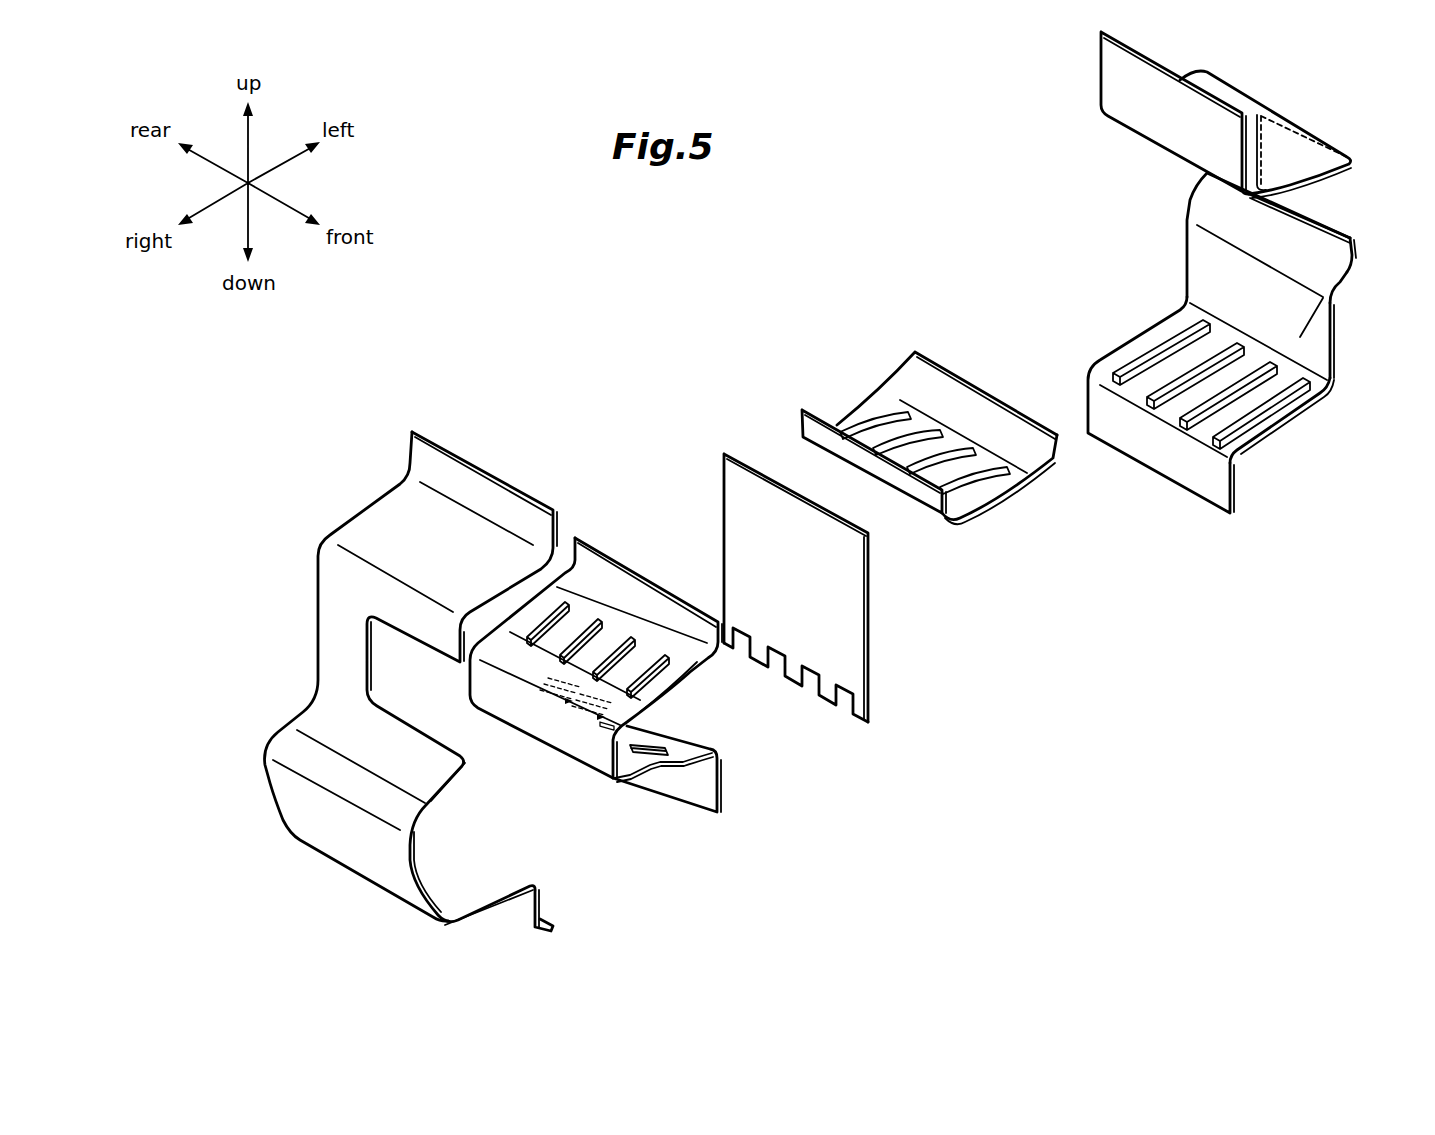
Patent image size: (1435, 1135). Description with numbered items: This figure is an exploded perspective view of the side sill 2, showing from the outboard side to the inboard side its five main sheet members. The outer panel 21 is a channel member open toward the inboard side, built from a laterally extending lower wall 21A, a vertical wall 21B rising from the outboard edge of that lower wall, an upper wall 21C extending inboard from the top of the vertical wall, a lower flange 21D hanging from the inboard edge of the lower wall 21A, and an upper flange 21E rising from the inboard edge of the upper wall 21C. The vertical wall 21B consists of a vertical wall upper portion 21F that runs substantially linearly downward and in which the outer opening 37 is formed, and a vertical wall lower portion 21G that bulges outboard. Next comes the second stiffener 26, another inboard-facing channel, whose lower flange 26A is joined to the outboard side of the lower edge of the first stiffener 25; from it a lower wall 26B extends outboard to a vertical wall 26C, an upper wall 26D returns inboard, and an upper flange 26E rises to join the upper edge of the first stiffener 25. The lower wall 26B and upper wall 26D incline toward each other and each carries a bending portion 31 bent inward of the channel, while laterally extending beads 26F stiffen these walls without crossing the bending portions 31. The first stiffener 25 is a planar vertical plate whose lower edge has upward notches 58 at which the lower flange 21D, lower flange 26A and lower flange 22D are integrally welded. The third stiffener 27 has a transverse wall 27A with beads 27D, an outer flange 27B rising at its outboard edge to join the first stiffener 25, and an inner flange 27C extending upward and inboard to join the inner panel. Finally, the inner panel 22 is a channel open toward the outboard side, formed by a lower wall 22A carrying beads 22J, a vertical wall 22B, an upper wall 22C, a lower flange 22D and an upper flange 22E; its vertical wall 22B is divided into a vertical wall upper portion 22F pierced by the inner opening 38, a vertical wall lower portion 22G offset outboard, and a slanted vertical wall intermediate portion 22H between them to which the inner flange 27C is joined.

The side sill 2 is at (221, 404).
The outer panel 21 is at (307, 521).
The lower wall 21A is at (485, 862).
The vertical wall 21B is at (320, 588).
The upper wall 21C is at (384, 509).
The lower flange 21D is at (506, 905).
The upper flange 21E is at (485, 491).
The vertical wall upper portion 21F is at (322, 637).
The vertical wall lower portion 21G is at (283, 810).
The outer opening 37 is at (370, 681).
The second stiffener 26 is at (586, 542).
The lower flange 26A is at (698, 790).
The lower wall 26B is at (680, 740).
The vertical wall 26C is at (592, 750).
The upper wall 26D is at (612, 624).
The upper flange 26E is at (683, 606).
The beads 26F is at (645, 658).
The bending portion 31 is at (570, 655).
The first stiffener 25 is at (850, 598).
The notches 58 is at (825, 700).
The third stiffener 27 is at (975, 512).
The transverse wall 27A is at (1020, 482).
The outer flange 27B is at (803, 426).
The inner flange 27C is at (952, 390).
The beads 27D is at (905, 436).
The inner panel 22 is at (1316, 408).
The lower wall 22A is at (1256, 432).
The vertical wall 22B is at (1302, 338).
The upper wall 22C is at (1243, 100).
The lower flange 22D is at (1200, 488).
The upper flange 22E is at (1100, 79).
The vertical wall upper portion 22F is at (1348, 249).
The vertical wall lower portion 22G is at (1197, 251).
The vertical wall intermediate portion 22H is at (1333, 289).
The beads 22J is at (1190, 362).
The inner opening 38 is at (1322, 216).